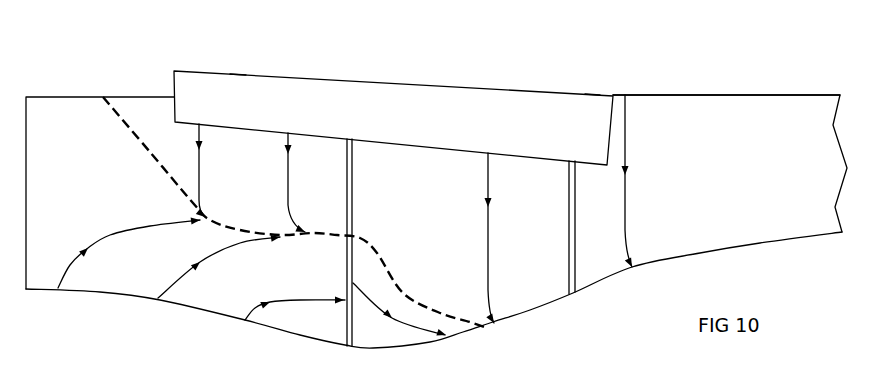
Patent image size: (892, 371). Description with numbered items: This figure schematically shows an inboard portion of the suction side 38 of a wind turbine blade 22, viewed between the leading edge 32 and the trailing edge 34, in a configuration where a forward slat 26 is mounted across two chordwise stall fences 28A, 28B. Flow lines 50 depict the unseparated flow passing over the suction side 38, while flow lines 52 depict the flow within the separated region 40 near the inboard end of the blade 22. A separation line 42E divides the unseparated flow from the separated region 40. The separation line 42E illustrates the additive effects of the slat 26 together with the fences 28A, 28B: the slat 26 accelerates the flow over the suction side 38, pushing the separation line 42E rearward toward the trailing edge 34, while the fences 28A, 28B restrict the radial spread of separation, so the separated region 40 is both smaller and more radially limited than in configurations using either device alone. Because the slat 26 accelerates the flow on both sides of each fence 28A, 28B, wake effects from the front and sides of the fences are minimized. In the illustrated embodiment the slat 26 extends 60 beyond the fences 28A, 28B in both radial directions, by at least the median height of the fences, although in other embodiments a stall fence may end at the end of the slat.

The wind turbine blade 22 is at (603, 315).
The forward slat 26 is at (397, 124).
The stall fence 28A is at (568, 212).
The stall fence 28B is at (353, 195).
The leading edge 32 is at (693, 93).
The trailing edge 34 is at (107, 295).
The suction side 38 is at (784, 180).
The separated region 40 is at (87, 175).
The separation line 42E is at (403, 255).
The flow lines of the unseparated region 50 is at (202, 167).
The flow lines of the separated region 52 is at (118, 230).
The slat extension beyond the fences 60 is at (238, 85).